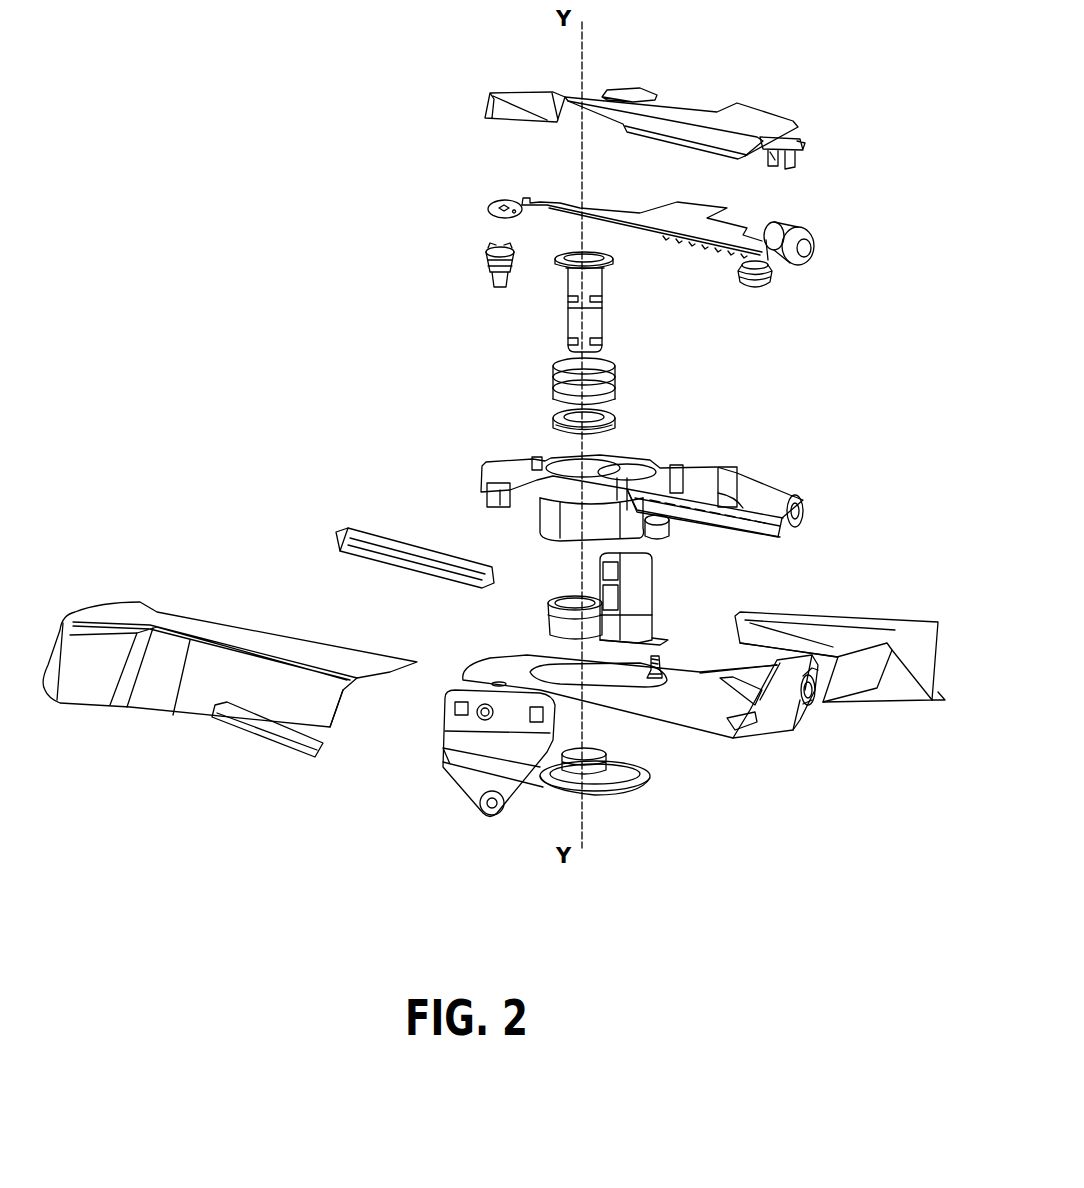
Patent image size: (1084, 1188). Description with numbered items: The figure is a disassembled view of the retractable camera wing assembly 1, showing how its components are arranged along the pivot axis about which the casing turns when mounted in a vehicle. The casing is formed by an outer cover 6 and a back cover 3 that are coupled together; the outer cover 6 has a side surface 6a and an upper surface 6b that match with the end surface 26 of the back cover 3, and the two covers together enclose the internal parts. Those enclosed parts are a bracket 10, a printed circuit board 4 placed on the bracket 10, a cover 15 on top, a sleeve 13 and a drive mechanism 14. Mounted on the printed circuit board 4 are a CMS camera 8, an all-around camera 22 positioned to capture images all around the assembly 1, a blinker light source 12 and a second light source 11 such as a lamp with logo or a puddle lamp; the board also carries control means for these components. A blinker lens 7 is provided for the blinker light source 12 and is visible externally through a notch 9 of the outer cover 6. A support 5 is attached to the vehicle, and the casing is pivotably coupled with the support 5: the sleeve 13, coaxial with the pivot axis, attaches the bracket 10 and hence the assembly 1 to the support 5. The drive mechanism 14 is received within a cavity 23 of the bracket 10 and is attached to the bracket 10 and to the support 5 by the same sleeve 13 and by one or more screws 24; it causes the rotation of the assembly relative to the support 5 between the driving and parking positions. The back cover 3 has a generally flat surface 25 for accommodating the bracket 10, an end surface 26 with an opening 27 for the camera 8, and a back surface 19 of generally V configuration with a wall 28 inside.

The retractable camera wing assembly 1 is at (403, 124).
The back cover 3 is at (850, 678).
The printed circuit board 4 is at (750, 226).
The support 5 is at (472, 787).
The outer cover 6 is at (95, 676).
The side surface 6a is at (198, 706).
The upper surface 6b is at (172, 620).
The blinker lens 7 is at (407, 568).
The CMS camera 8 is at (818, 251).
The notch 9 is at (268, 719).
The bracket 10 is at (760, 490).
The second light source 11 is at (490, 251).
The blinker light source 12 is at (687, 247).
The sleeve 13 is at (575, 320).
The drive mechanism 14 is at (647, 600).
The cover 15 is at (690, 107).
The back surface 19 is at (905, 630).
The 360° camera 22 is at (762, 286).
The cavity 23 is at (633, 461).
The screws 24 is at (667, 685).
The flat surface 25 is at (661, 710).
The end surface 26 is at (780, 720).
The opening 27 is at (818, 696).
The wall 28 is at (853, 648).